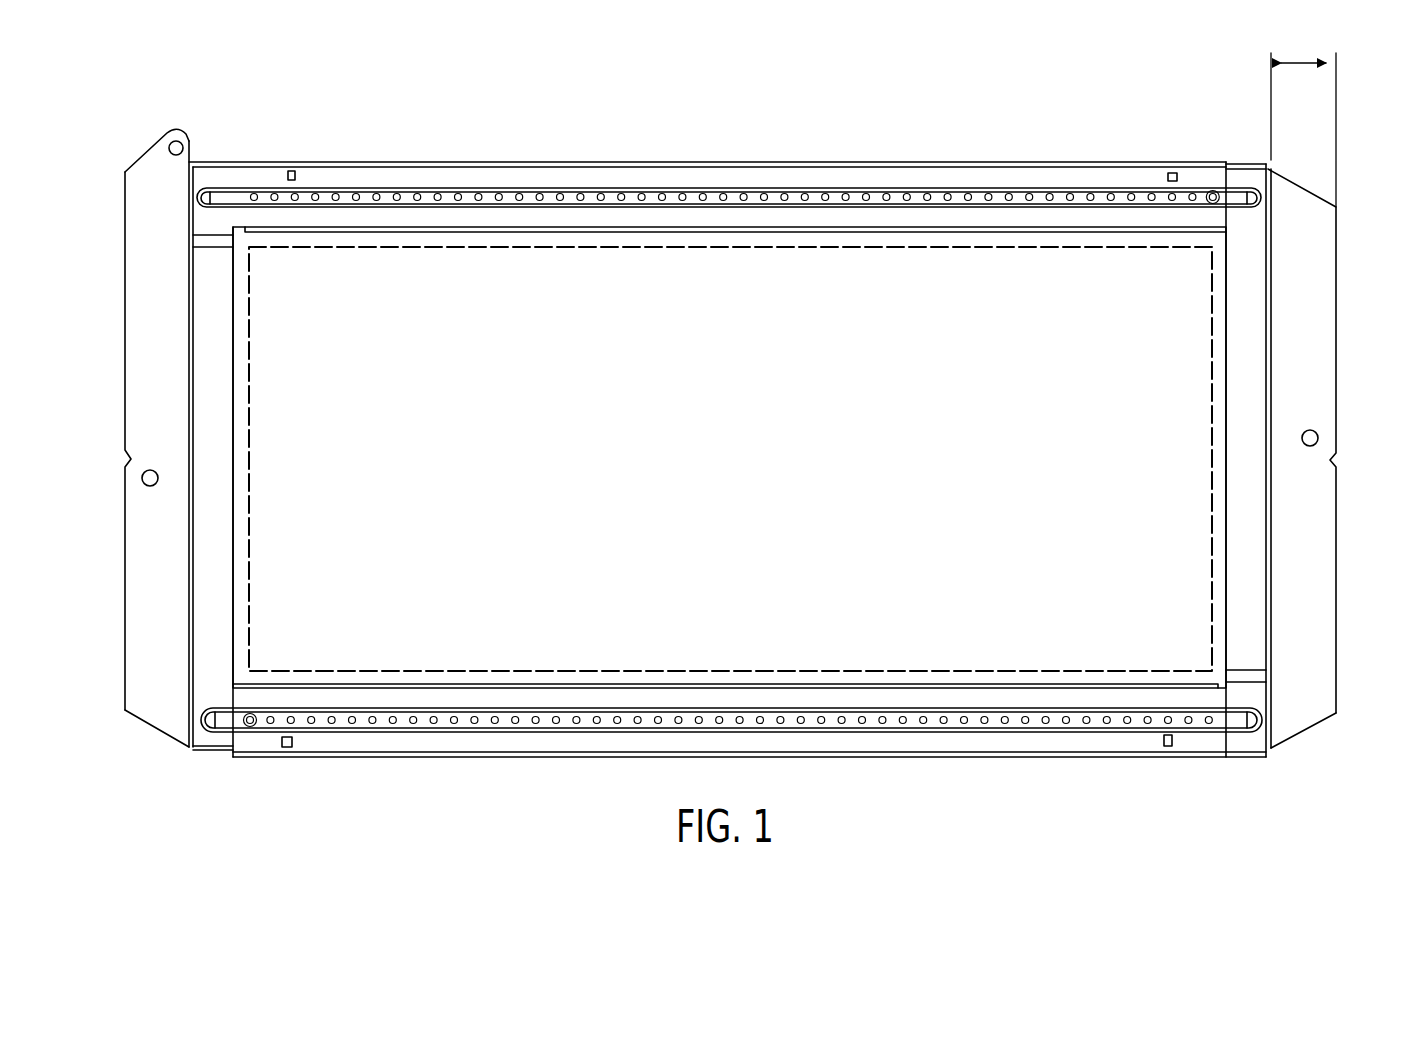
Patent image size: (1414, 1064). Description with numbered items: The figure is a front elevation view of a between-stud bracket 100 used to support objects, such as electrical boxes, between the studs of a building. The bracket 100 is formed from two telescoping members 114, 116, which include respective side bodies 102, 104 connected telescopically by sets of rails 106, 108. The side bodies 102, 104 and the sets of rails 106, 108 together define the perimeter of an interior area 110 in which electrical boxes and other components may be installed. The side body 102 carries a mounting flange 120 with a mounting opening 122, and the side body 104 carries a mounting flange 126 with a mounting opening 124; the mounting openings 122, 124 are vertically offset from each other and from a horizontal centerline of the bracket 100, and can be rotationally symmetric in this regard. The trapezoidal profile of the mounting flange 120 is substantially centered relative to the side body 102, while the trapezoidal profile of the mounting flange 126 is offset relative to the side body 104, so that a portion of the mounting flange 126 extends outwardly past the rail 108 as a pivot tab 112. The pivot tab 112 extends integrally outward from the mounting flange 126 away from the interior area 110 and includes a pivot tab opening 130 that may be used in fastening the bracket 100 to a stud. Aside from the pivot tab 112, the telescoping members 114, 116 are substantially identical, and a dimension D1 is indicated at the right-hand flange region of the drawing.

The between-stud bracket 100 is at (592, 791).
The side body 102 is at (1250, 646).
The side body 104 is at (212, 625).
The set of rails 106 is at (918, 745).
The set of rails 108 is at (690, 178).
The interior area 110 is at (731, 252).
The pivot tab 112 is at (142, 153).
The telescoping member 114 is at (1359, 547).
The telescoping member 116 is at (94, 291).
The mounting flange 120 is at (1312, 703).
The mounting opening 122 is at (1305, 430).
The mounting opening 124 is at (157, 469).
The mounting flange 126 is at (165, 712).
The pivot tab opening 130 is at (183, 146).
The bracket width dimension D1 is at (1303, 63).